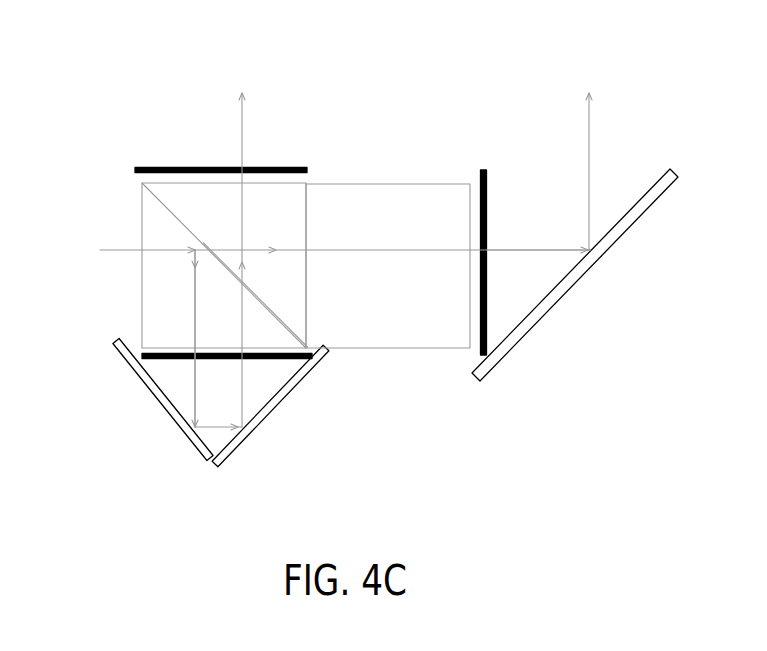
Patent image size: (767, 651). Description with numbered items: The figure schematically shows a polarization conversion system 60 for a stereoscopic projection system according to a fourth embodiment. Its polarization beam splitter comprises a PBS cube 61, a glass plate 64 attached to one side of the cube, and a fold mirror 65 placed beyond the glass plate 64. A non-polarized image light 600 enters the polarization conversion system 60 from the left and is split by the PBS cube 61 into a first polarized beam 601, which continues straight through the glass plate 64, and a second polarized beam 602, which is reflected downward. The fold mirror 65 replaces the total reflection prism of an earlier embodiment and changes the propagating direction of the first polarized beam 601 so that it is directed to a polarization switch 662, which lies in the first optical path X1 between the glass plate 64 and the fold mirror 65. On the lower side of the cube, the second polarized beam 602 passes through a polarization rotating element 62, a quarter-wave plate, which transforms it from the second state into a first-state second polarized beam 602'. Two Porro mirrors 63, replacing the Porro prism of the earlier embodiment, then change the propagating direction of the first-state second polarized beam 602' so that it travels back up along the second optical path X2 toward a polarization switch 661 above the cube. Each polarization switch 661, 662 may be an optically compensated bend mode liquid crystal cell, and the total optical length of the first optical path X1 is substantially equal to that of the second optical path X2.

The polarization conversion system 60 is at (730, 50).
The PBS cube 61 is at (152, 223).
The polarization switch 661 is at (173, 167).
The polarization rotating element 62 is at (280, 360).
The Porro mirrors 63 is at (252, 437).
The glass plate 64 is at (435, 337).
The polarization switch 662 is at (483, 169).
The fold mirror 65 is at (588, 270).
The non-polarized image light 600 is at (125, 250).
The first polarized beam 601 is at (533, 250).
The second polarized beam 602 is at (162, 347).
The first-state second polarized beam 602' is at (216, 318).
The first optical path X1 is at (565, 250).
The second optical path X2 is at (193, 288).